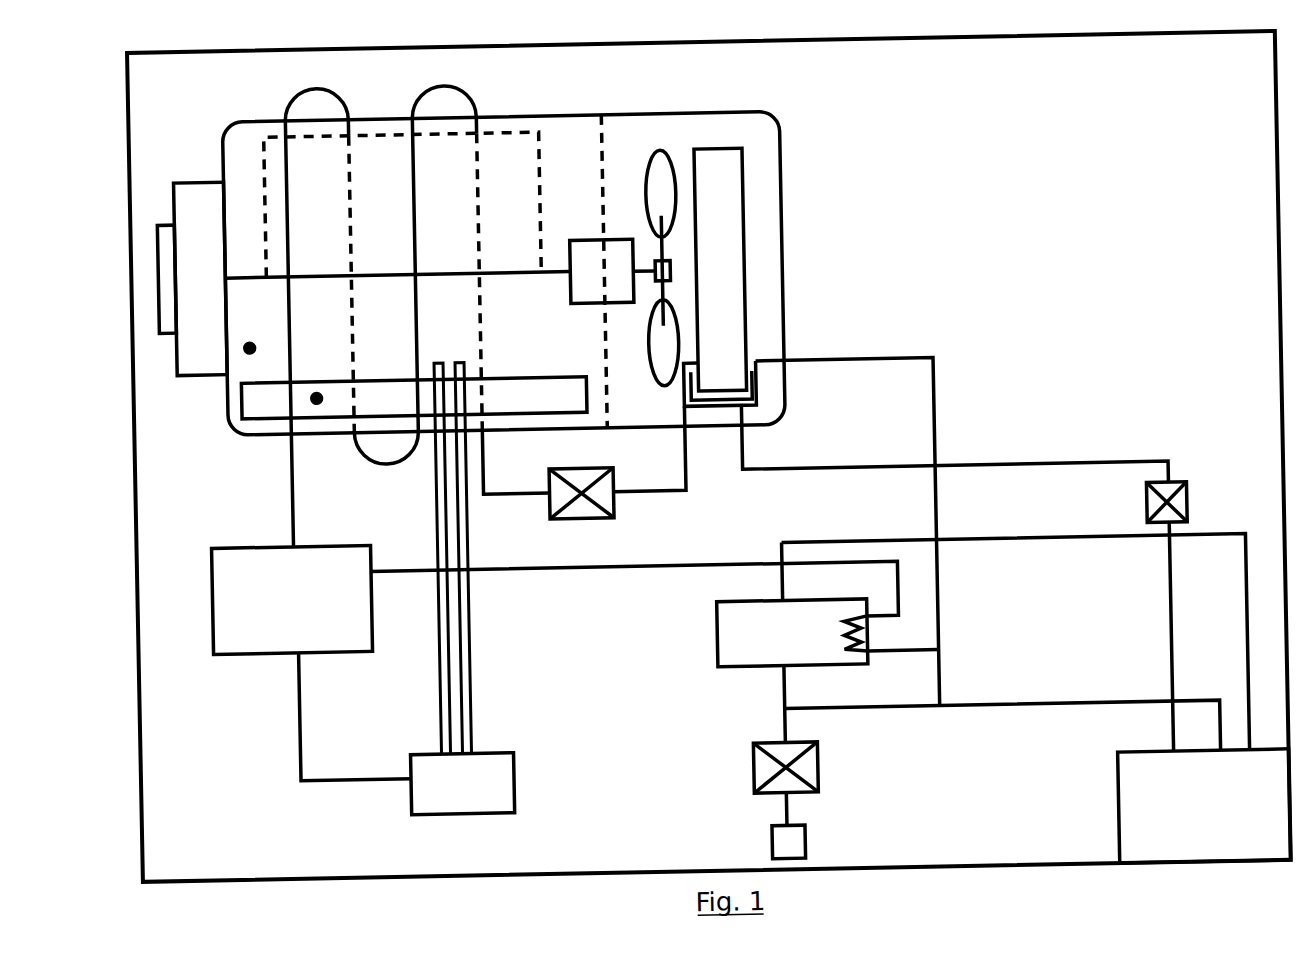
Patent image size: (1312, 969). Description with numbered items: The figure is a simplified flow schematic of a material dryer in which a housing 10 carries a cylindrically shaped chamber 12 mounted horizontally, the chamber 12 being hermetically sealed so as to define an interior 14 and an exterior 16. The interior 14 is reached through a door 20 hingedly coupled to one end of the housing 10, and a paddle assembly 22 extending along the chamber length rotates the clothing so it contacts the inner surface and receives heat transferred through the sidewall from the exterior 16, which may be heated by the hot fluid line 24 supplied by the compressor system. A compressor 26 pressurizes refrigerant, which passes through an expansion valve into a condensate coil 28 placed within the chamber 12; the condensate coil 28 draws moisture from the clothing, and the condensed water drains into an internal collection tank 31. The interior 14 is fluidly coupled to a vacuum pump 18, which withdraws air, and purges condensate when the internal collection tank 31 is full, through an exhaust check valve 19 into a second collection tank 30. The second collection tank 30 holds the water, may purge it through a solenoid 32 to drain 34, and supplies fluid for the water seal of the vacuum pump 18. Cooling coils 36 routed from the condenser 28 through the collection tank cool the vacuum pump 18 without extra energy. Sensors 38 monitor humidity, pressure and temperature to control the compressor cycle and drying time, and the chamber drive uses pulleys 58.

The housing 10 is at (1271, 229).
The chamber 12 is at (779, 181).
The interior 14 is at (244, 350).
The exterior 16 is at (682, 122).
The vacuum pump 18 is at (1103, 814).
The exhaust check valve 19 is at (1177, 501).
The door 20 is at (196, 378).
The paddle assembly 22 is at (310, 402).
The hot fluid line 24 is at (282, 98).
The compressor 26 is at (240, 658).
The condensate coil 28 is at (741, 283).
The second collection tank 30 is at (705, 648).
The internal collection tank 31 is at (712, 419).
The solenoid 32 is at (739, 770).
The drain 34 is at (756, 854).
The cooling coils 36 is at (857, 644).
The sensors 38 is at (396, 806).
The pulleys 58 is at (674, 161).